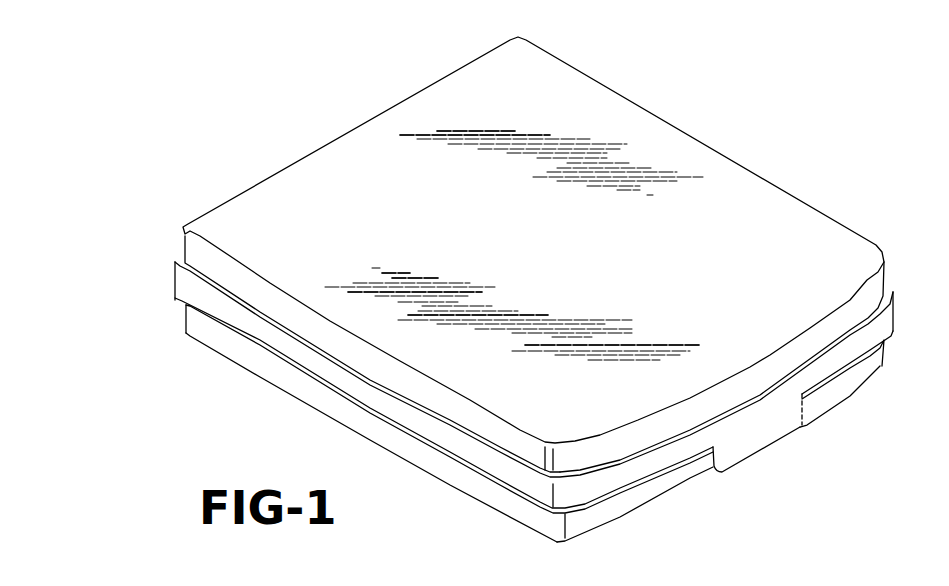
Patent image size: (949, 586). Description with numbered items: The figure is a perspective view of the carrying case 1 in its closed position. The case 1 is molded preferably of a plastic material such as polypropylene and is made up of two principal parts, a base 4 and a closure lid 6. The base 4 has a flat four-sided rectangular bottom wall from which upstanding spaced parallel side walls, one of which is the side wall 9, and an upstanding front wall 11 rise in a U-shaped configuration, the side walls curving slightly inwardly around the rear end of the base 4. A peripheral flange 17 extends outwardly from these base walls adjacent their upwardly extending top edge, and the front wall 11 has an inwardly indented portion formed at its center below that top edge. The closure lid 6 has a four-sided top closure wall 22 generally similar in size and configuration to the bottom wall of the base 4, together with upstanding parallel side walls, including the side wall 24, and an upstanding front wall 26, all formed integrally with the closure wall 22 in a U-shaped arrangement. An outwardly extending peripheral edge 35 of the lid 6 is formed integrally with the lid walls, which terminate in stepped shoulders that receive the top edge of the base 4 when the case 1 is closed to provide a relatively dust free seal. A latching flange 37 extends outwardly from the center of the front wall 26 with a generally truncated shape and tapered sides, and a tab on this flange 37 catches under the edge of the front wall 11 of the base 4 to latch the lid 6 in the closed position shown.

The carrying case 1 is at (765, 124).
The top closure wall 22 is at (657, 133).
The closure lid 6 is at (814, 202).
The front wall 26 is at (797, 357).
The peripheral edge 35 is at (297, 355).
The side wall 24 is at (352, 353).
The side wall 9 is at (362, 423).
The base 4 is at (452, 494).
The peripheral flange 17 is at (622, 497).
The front wall 11 is at (693, 482).
The latching flange 37 is at (758, 445).